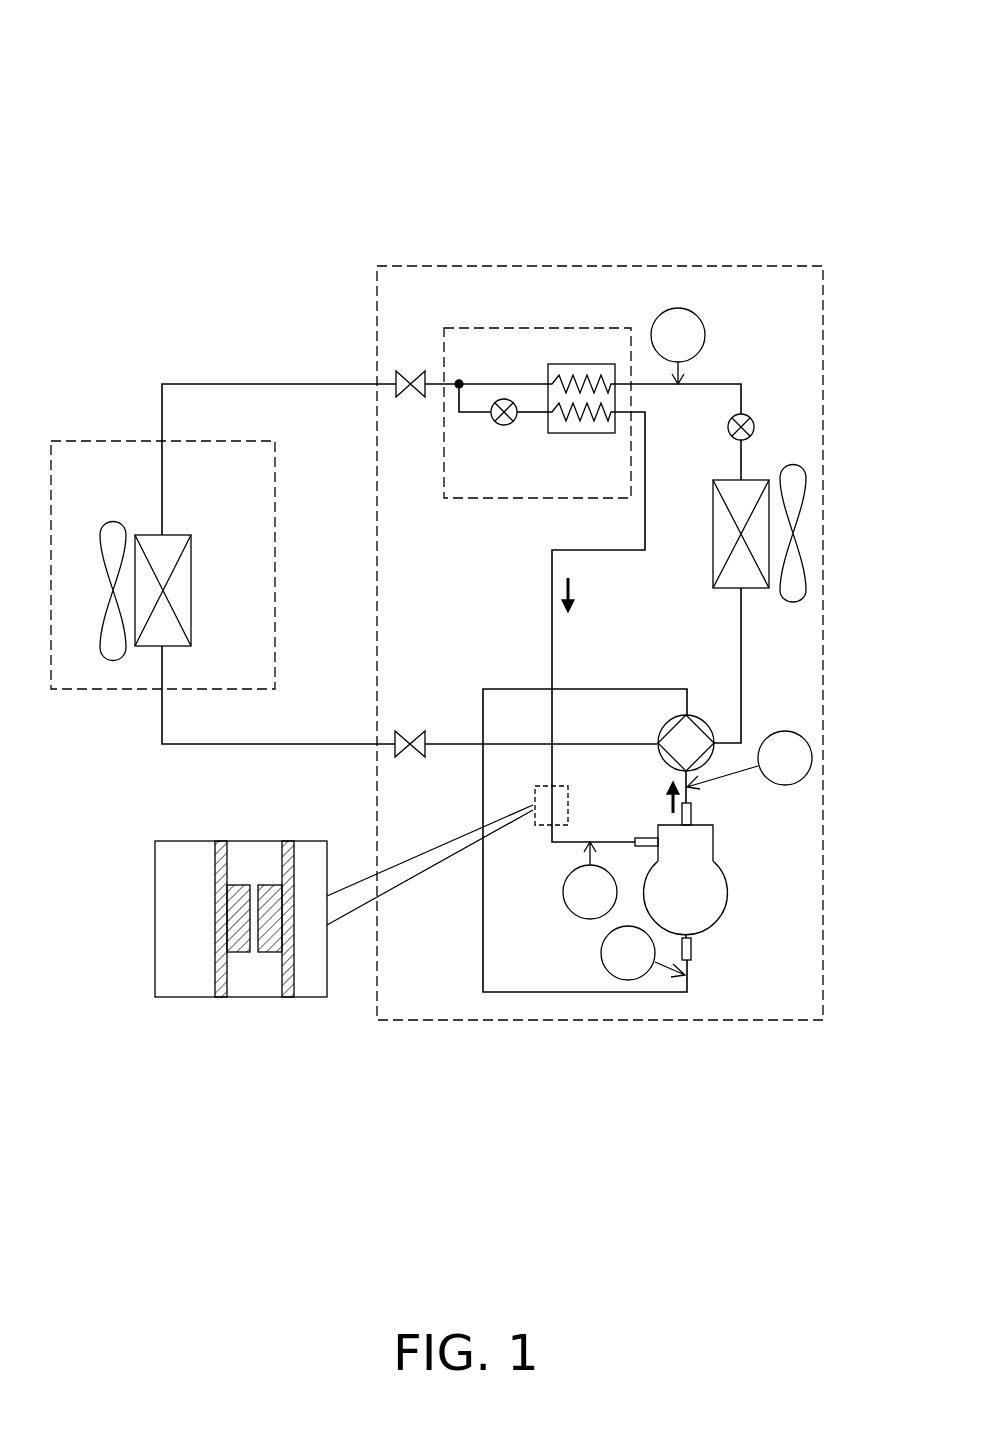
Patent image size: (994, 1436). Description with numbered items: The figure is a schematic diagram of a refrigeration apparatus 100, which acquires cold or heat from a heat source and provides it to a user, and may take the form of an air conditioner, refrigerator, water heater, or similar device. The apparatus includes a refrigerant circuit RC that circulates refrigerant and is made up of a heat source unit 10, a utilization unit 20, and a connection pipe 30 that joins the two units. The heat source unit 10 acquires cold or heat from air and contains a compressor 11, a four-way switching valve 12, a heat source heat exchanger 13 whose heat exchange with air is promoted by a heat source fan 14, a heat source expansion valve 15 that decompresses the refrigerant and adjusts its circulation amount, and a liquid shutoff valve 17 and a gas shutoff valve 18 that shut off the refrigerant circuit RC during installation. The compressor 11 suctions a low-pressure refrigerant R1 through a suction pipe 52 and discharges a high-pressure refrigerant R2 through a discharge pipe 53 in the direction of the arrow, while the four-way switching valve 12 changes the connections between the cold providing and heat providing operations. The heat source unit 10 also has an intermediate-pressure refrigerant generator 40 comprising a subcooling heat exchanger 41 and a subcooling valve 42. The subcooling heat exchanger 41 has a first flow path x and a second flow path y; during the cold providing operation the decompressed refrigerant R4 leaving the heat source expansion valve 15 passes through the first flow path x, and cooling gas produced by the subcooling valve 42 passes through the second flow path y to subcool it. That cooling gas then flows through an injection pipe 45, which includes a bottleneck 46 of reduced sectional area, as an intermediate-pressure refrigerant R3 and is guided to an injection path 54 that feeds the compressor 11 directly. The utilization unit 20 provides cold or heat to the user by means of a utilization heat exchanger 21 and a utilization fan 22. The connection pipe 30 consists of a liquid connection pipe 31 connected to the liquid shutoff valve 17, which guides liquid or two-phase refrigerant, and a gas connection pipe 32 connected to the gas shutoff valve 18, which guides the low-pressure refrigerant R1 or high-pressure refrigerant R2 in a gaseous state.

The refrigeration apparatus 100 is at (188, 88).
The refrigerant circuit RC is at (687, 200).
The heat source unit 10 is at (437, 266).
The utilization unit 20 is at (76, 441).
The connection pipe 30 is at (300, 302).
The liquid connection pipe 31 is at (225, 383).
The gas connection pipe 32 is at (198, 747).
The compressor 11 is at (727, 893).
The four-way switching valve 12 is at (707, 722).
The heat source heat exchanger 13 is at (713, 535).
The heat source fan 14 is at (795, 604).
The heat source expansion valve 15 is at (755, 425).
The liquid shutoff valve 17 is at (405, 397).
The gas shutoff valve 18 is at (402, 731).
The utilization heat exchanger 21 is at (191, 590).
The utilization fan 22 is at (113, 522).
The intermediate-pressure refrigerant generator 40 is at (535, 328).
The subcooling heat exchanger 41 is at (585, 433).
The subcooling valve 42 is at (502, 425).
The first flow path x is at (550, 382).
The second flow path y is at (552, 420).
The injection pipe 45 is at (552, 578).
The bottleneck 46 is at (235, 915).
The suction pipe 52 is at (691, 948).
The discharge pipe 53 is at (691, 812).
The injection path 54 is at (645, 838).
The low-pressure refrigerant R1 is at (643, 953).
The high-pressure refrigerant R2 is at (749, 760).
The intermediate-pressure refrigerant R3 is at (590, 880).
The decompressed refrigerant R4 is at (678, 346).